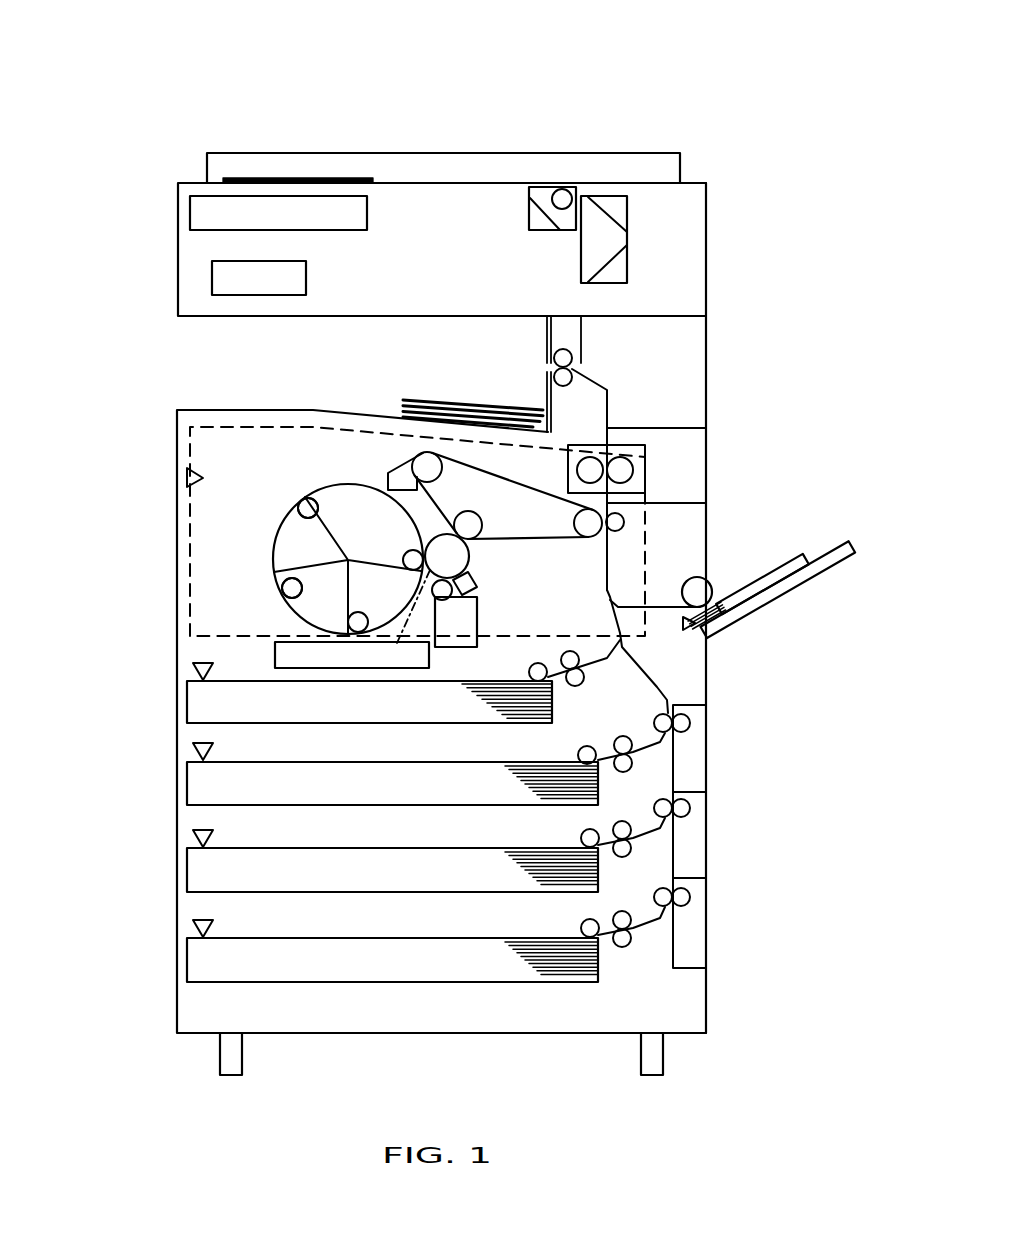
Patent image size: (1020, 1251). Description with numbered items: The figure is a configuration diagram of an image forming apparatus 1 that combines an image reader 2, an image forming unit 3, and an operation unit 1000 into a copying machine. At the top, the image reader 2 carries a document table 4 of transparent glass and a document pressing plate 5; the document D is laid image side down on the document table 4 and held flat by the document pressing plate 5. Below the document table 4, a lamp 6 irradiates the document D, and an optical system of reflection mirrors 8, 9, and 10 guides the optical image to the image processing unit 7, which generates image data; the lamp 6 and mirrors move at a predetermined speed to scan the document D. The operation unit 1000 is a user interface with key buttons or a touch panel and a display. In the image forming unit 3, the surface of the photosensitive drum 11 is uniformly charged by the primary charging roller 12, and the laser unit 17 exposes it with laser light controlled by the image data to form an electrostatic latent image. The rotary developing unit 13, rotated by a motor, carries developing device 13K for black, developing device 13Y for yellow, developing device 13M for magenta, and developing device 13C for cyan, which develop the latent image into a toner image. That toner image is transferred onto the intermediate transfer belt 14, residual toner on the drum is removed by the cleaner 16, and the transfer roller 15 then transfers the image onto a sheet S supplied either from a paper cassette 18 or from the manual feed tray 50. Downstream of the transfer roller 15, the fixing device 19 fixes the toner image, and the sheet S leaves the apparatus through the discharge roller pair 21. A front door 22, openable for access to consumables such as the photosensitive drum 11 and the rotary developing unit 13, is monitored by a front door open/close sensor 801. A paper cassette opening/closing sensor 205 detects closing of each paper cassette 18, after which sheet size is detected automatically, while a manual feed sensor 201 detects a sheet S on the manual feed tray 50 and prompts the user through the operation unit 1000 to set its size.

The image forming apparatus 1 is at (578, 65).
The image reader 2 is at (178, 190).
The image forming unit 3 is at (177, 420).
The document table 4 is at (480, 183).
The document pressing plate 5 is at (345, 153).
The lamp 6 is at (568, 185).
The image processing unit 7 is at (212, 274).
The reflection mirror 8 is at (540, 220).
The reflection mirror 9 is at (617, 220).
The reflection mirror 10 is at (610, 263).
The photosensitive drum 11 is at (468, 558).
The primary charging roller 12 is at (450, 603).
The rotary developing unit 13 is at (297, 479).
The developing device 13K is at (341, 500).
The developing device 13C is at (288, 542).
The developing device 13Y is at (363, 580).
The developing device 13M is at (307, 617).
The intermediate transfer belt 14 is at (527, 488).
The transfer roller 15 is at (627, 523).
The cleaner 16 is at (468, 582).
The laser unit 17 is at (275, 652).
The paper cassette 18 is at (187, 707).
The fixing device 19 is at (647, 460).
The discharge roller pair 21 is at (580, 360).
The front door 22 is at (242, 427).
The manual feed tray 50 is at (855, 546).
The manual feed sensor 201 is at (683, 628).
The paper cassette opening/closing sensor 205 is at (190, 667).
The front door open/close sensor 801 is at (185, 477).
The operation unit 1000 is at (190, 212).
The document D is at (303, 180).
The sheet S is at (407, 400).